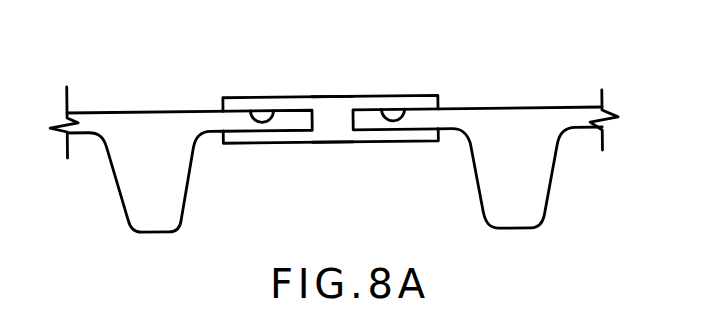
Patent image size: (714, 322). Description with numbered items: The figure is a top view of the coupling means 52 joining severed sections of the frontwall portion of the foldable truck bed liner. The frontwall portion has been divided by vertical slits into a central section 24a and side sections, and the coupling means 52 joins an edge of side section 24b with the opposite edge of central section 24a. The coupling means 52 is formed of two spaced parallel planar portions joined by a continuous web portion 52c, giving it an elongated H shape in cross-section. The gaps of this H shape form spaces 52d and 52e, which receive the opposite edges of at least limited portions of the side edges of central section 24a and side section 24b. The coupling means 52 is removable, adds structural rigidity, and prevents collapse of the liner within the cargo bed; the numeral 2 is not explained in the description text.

The corrugated sheet / trough 2 is at (137, 195).
The central section 24a is at (535, 104).
The side section 24b is at (138, 110).
The coupling means 52 is at (336, 95).
The web portion 52c is at (335, 122).
The space 52d is at (253, 118).
The space 52e is at (410, 111).